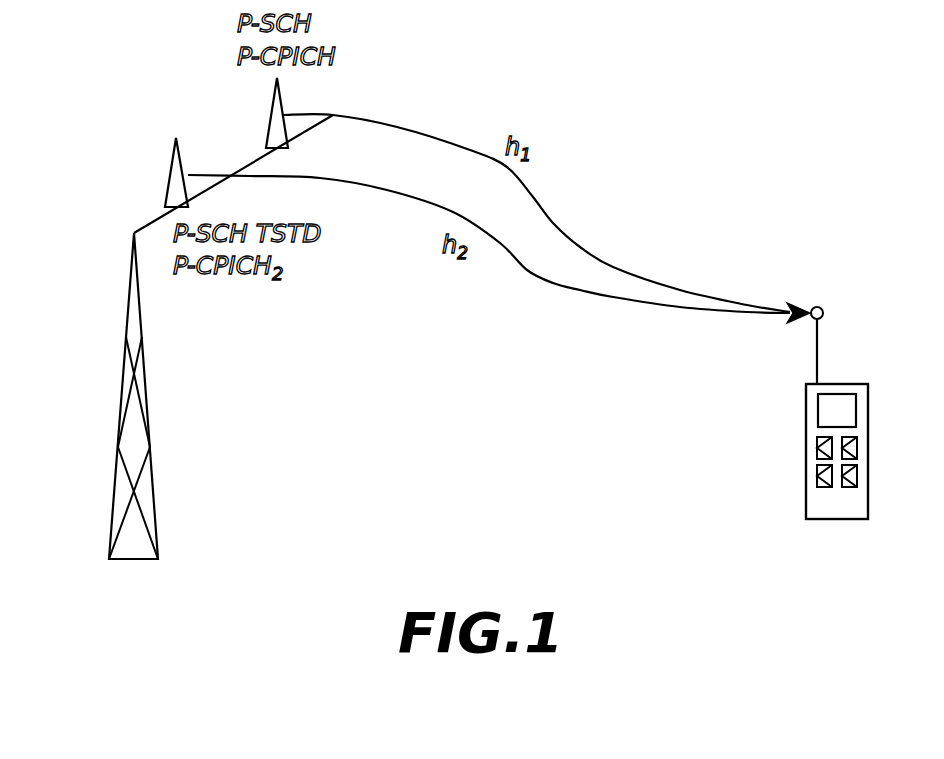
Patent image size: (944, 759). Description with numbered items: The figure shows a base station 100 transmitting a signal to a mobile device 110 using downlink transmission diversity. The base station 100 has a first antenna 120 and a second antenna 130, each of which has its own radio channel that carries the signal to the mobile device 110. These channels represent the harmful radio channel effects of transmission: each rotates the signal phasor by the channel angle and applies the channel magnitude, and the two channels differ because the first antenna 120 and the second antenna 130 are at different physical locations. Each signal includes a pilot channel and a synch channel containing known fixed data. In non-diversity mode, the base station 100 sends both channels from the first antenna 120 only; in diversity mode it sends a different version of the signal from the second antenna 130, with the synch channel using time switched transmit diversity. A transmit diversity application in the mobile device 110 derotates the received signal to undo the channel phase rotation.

The base station 100 is at (122, 395).
The mobile device 110 is at (806, 453).
The first antenna 120 is at (266, 115).
The second antenna 130 is at (165, 175).